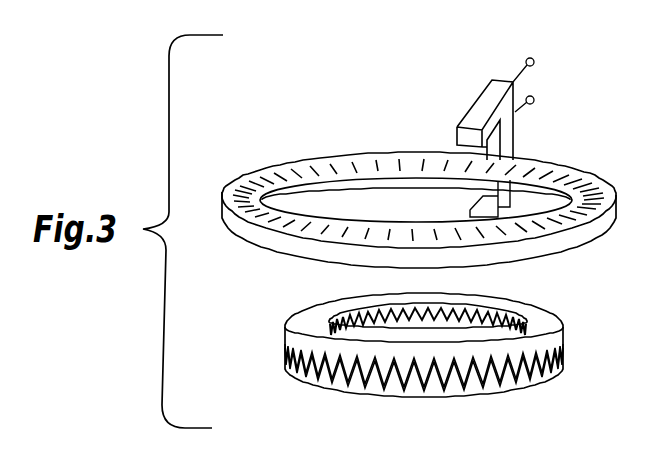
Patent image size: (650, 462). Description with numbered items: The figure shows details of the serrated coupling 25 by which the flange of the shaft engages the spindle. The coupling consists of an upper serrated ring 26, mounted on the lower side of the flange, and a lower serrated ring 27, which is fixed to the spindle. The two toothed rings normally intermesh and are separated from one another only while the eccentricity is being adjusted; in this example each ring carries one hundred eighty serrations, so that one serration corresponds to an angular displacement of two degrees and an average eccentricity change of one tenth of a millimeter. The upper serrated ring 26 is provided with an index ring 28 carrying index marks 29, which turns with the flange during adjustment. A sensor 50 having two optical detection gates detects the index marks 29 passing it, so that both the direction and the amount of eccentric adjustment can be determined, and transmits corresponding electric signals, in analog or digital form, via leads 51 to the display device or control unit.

The serrated coupling 25 is at (598, 397).
The upper serrated ring 26 is at (547, 313).
The lower serrated ring 27 is at (312, 372).
The index ring 28 is at (232, 191).
The index marks 29 is at (336, 163).
The sensor 50 is at (482, 110).
The leads 51 is at (538, 85).